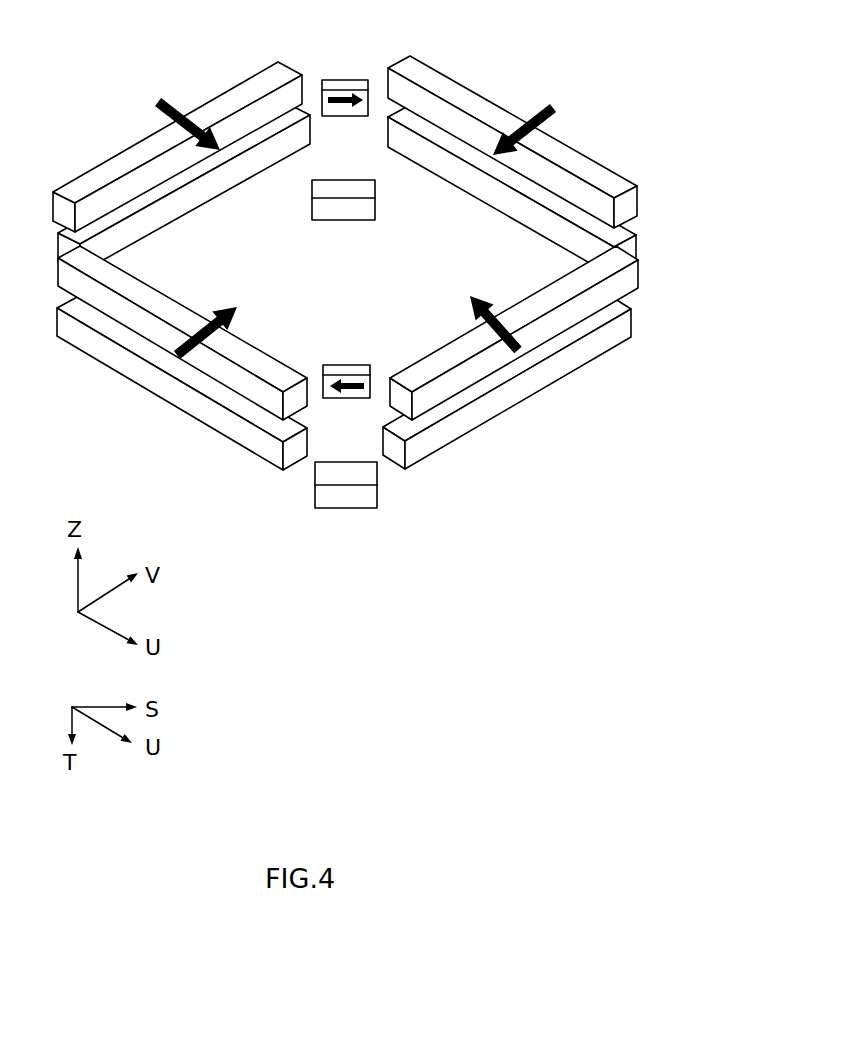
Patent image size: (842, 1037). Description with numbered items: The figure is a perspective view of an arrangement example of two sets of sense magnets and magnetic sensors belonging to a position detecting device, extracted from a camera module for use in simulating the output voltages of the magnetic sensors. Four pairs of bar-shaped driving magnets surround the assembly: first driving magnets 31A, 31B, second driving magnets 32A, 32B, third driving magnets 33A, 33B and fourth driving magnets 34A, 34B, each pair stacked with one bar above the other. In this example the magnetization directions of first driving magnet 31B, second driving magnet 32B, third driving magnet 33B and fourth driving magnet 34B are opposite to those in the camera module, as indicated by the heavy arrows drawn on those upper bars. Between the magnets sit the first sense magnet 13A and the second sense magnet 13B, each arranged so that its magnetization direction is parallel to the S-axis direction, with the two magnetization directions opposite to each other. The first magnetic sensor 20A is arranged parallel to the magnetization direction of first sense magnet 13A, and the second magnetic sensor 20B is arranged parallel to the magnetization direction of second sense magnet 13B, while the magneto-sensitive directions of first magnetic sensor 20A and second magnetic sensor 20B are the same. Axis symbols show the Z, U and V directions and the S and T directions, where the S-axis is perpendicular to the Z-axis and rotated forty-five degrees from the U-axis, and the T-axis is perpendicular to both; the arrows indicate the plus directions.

The first sense magnet 13A is at (342, 86).
The second sense magnet 13B is at (340, 370).
The first magnetic sensor 20A is at (343, 190).
The second magnetic sensor 20B is at (355, 492).
The first driving magnet 31A is at (212, 413).
The first driving magnet 31B is at (188, 323).
The second driving magnet 32A is at (502, 203).
The second driving magnet 32B is at (500, 120).
The third driving magnet 33A is at (173, 207).
The third driving magnet 33B is at (122, 160).
The fourth driving magnet 34A is at (512, 403).
The fourth driving magnet 34B is at (428, 356).